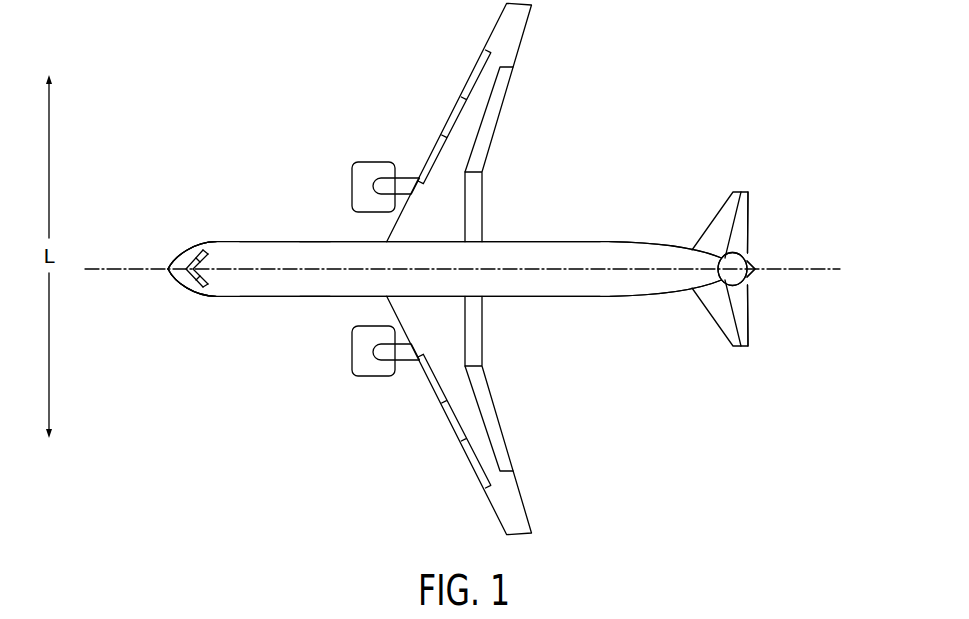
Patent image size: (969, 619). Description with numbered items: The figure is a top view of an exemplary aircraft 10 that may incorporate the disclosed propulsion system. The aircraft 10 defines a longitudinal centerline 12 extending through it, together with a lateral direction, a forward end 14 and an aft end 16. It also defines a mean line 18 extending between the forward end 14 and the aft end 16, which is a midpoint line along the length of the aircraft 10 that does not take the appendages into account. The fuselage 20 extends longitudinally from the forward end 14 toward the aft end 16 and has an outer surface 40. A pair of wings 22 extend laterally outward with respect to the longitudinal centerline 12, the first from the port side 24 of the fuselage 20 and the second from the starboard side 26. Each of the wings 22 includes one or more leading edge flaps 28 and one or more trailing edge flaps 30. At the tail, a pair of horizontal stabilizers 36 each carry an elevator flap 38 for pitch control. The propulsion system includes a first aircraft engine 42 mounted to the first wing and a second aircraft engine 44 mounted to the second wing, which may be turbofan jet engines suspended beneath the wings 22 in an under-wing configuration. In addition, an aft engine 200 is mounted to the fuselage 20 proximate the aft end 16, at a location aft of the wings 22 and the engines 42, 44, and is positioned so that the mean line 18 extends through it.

The aircraft 10 is at (628, 86).
The longitudinal centerline 12 is at (138, 268).
The forward end 14 is at (163, 286).
The aft end 16 is at (776, 304).
The mean line 18 is at (237, 267).
The fuselage 20 is at (213, 285).
The wings 22 is at (512, 23).
The port side 24 is at (287, 305).
The starboard side 26 is at (283, 233).
The leading edge flaps 28 is at (451, 424).
The trailing edge flaps 30 is at (500, 427).
The horizontal stabilizers 36 is at (728, 208).
The elevator flap 38 is at (742, 212).
The outer surface 40 is at (588, 285).
The first aircraft engine 42 is at (366, 378).
The second aircraft engine 44 is at (363, 160).
The aft engine 200 is at (749, 240).